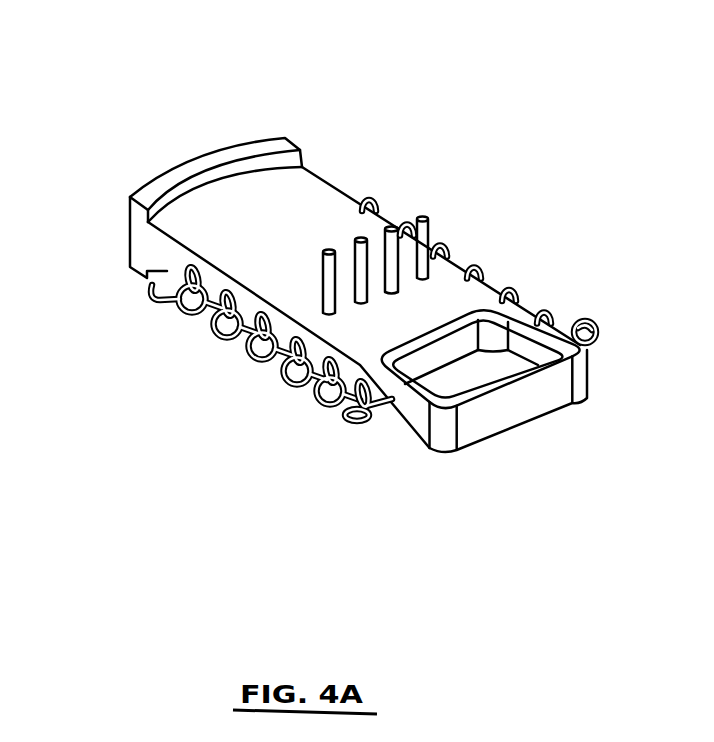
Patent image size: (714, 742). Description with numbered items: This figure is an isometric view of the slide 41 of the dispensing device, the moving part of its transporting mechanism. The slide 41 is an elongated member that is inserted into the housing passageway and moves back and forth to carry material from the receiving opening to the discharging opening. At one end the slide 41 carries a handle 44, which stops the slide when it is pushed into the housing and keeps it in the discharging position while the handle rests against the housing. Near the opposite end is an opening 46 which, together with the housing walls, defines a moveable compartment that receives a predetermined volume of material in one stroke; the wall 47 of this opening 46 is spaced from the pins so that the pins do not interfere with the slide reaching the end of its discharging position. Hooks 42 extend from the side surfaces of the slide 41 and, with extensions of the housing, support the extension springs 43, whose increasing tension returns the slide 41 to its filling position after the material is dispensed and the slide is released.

The slide 41 is at (305, 200).
The hooks 42 is at (365, 422).
The extension springs 43 is at (248, 355).
The handle 44 is at (158, 188).
The opening 46 is at (470, 372).
The wall 47 is at (505, 378).